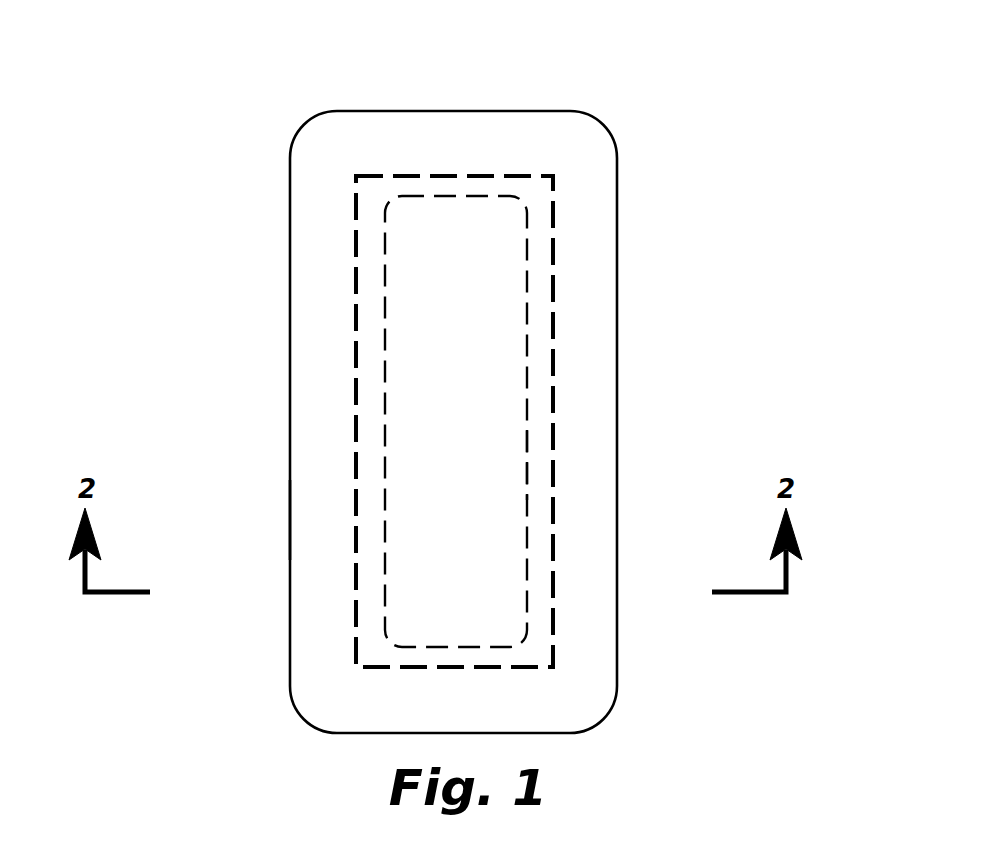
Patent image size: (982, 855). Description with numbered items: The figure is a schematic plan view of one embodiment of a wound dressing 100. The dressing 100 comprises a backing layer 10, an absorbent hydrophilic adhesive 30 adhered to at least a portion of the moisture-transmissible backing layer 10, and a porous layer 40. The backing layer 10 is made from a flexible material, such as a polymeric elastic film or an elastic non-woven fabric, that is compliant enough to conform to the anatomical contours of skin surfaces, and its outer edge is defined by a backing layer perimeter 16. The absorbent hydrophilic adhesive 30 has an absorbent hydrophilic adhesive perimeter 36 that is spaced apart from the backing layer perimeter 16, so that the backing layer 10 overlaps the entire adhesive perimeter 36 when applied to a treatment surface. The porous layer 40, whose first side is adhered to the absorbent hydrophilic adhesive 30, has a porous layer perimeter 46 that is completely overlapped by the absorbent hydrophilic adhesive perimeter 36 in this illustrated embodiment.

The wound dressing 100 is at (280, 62).
The backing layer 10 is at (323, 324).
The backing layer perimeter 16 is at (293, 515).
The absorbent hydrophilic adhesive 30 is at (533, 188).
The absorbent hydrophilic adhesive perimeter 36 is at (553, 257).
The porous layer perimeter 46 is at (528, 462).
The porous layer 40 is at (509, 518).